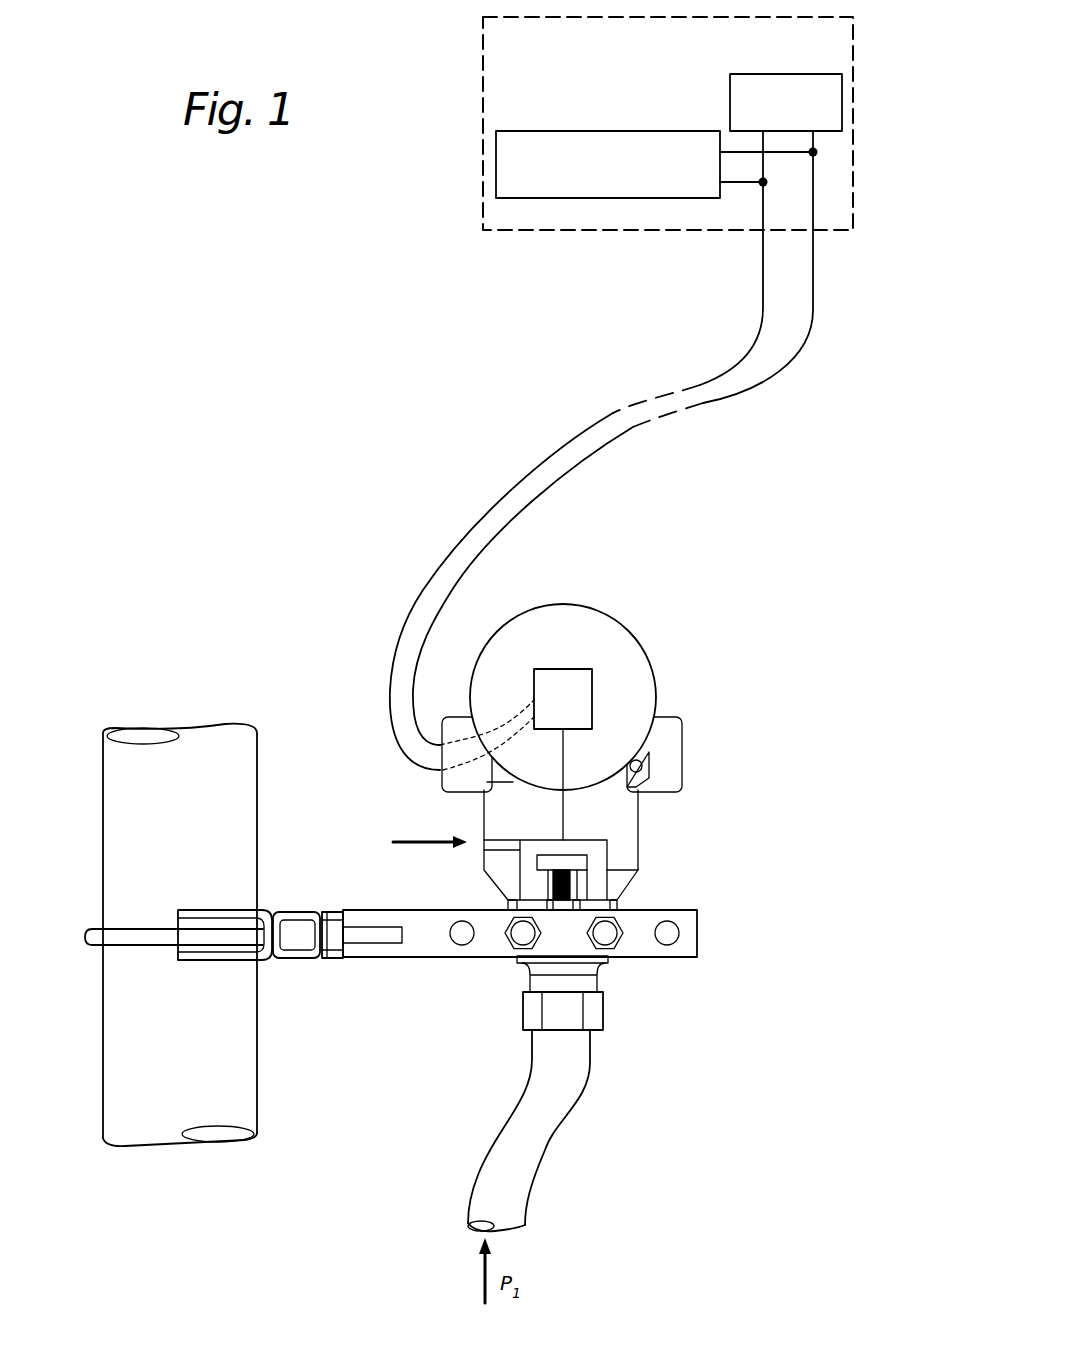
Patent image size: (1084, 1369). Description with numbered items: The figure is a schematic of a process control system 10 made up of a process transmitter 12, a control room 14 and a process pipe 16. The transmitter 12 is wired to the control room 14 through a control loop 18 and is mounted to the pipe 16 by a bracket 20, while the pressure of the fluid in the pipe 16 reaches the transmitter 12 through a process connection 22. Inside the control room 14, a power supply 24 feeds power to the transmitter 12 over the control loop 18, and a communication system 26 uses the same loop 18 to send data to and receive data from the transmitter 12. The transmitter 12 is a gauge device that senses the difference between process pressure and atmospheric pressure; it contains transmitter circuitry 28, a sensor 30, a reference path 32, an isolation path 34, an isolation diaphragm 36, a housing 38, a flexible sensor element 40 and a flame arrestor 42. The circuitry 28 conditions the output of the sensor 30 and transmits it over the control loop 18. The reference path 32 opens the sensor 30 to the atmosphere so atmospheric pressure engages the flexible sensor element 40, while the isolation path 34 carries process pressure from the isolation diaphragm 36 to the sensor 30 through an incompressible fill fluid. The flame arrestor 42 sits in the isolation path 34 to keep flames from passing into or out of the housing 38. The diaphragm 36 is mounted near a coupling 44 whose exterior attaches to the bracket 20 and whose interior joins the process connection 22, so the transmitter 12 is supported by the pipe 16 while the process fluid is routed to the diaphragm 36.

The process control system 10 is at (292, 324).
The process transmitter 12 is at (708, 621).
The control room 14 is at (478, 133).
The process pipe 16 is at (243, 1032).
The control loop 18 is at (763, 295).
The bracket 20 is at (379, 976).
The process connection 22 is at (547, 1117).
The power supply 24 is at (730, 100).
The communication system 26 is at (570, 131).
The transmitter circuitry 28 is at (551, 712).
The sensor 30 is at (501, 873).
The reference path 32 is at (486, 833).
The isolation path 34 is at (593, 897).
The isolation diaphragm 36 is at (617, 882).
The housing 38 is at (627, 803).
The flexible sensor element 40 is at (542, 848).
The flame arrestor 42 is at (553, 885).
The coupling 44 is at (600, 963).